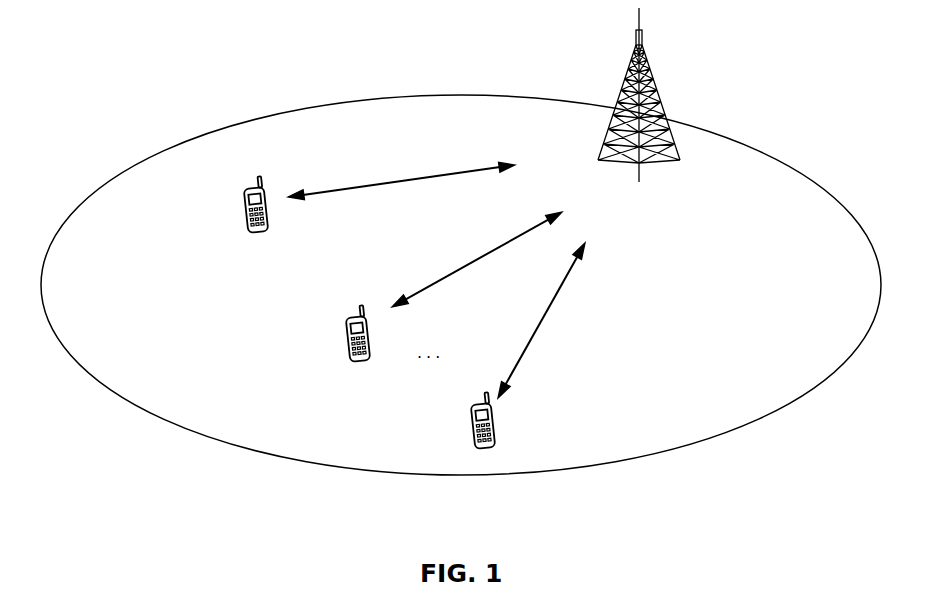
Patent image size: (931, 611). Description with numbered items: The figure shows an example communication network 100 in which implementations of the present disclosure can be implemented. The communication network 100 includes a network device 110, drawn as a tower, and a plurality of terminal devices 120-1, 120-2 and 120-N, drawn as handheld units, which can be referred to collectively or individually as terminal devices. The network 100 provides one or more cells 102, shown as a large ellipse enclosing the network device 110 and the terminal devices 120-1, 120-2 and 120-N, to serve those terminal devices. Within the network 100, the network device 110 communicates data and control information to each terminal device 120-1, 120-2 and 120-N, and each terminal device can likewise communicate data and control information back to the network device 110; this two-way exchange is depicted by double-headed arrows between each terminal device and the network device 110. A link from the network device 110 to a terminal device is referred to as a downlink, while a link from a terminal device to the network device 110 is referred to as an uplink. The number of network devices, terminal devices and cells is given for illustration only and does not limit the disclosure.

The communication network 100 is at (222, 86).
The cell 102 is at (727, 133).
The network device 110 is at (642, 40).
The terminal device 120-1 is at (245, 200).
The terminal device 120-2 is at (350, 305).
The terminal device 120-N is at (472, 418).